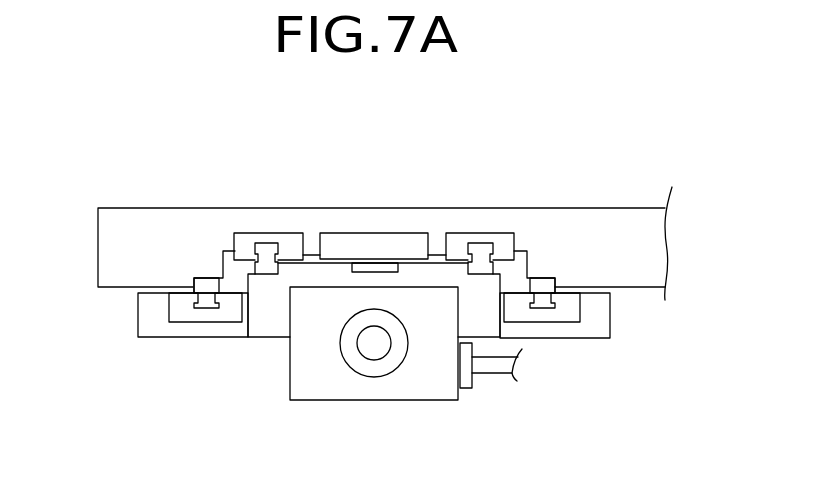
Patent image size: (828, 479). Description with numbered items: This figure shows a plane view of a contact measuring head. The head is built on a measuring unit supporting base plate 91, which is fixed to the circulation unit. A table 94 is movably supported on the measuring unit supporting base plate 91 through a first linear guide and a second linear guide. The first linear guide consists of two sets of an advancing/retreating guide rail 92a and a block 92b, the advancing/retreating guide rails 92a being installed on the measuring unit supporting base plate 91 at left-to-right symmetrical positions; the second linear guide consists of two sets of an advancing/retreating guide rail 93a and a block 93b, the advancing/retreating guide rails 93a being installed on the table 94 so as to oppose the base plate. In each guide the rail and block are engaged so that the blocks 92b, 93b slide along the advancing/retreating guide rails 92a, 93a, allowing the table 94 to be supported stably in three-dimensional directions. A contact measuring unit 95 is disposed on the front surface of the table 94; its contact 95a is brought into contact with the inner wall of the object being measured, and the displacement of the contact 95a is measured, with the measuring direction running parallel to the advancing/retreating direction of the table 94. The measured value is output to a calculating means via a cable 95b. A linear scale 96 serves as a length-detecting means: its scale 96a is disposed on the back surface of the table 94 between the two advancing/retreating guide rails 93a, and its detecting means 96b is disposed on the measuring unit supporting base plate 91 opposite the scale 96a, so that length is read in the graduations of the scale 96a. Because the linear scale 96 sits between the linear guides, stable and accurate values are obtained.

The measuring unit supporting base plate 91 is at (98, 245).
The advancing/retreating guide rail 92a is at (206, 300).
The block 92b is at (170, 312).
The advancing/retreating guide rail 93a is at (268, 266).
The block 93b is at (238, 237).
The table 94 is at (610, 318).
The contact measuring unit 95 is at (443, 388).
The contact 95a is at (377, 348).
The cable 95b is at (488, 378).
The linear scale 96 is at (445, 120).
The scale 96a is at (365, 267).
The detecting means 96b is at (383, 242).